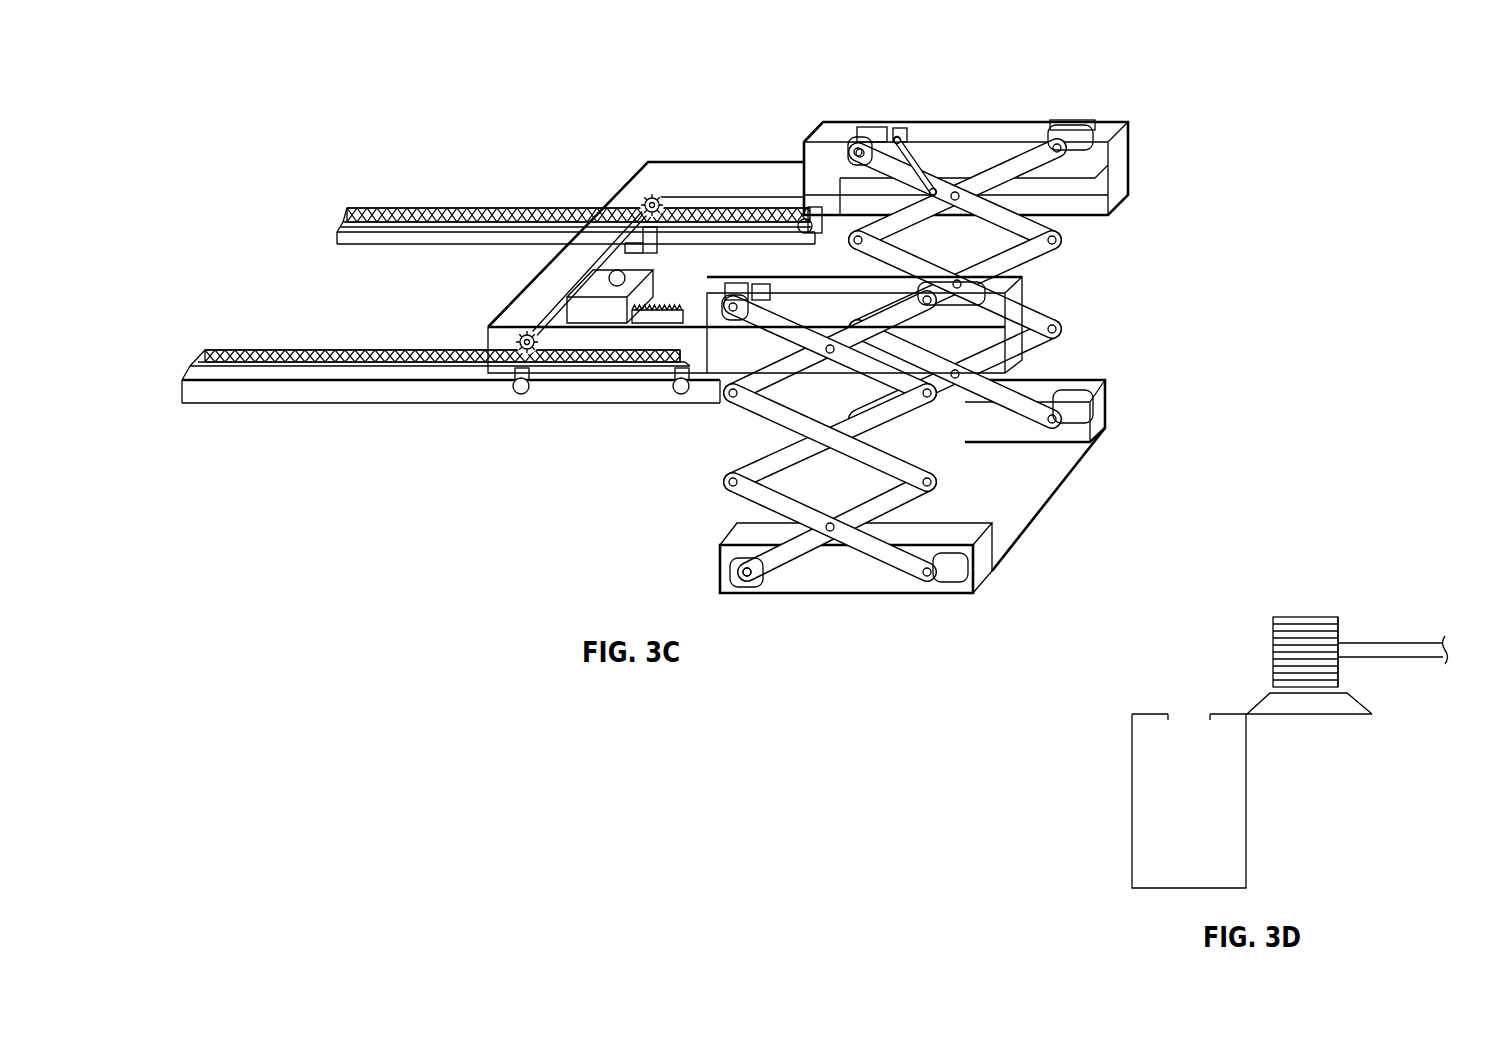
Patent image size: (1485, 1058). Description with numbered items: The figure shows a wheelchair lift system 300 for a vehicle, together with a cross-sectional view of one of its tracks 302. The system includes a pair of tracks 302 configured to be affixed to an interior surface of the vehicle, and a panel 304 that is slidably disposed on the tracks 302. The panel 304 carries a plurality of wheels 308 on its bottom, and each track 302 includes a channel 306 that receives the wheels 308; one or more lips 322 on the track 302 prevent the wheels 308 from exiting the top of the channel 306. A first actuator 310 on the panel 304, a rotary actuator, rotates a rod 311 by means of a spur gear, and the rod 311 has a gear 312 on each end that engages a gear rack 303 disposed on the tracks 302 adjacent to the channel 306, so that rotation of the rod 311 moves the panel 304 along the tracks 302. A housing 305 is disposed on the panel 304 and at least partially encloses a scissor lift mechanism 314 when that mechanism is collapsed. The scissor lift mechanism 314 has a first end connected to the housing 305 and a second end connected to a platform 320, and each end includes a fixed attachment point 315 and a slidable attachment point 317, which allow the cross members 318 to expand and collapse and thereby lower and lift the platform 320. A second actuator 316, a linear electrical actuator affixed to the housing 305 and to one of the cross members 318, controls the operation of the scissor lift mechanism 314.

In FIG. 3C, the wheelchair lift system 300 is at (632, 330).
In FIG. 3C, the track 302 is at (337, 240).
In FIG. 3D, the track 302 is at (1372, 616).
In FIG. 3C, the gear rack 303 is at (260, 350).
In FIG. 3D, the gear rack 303 is at (1352, 698).
In FIG. 3C, the panel 304 is at (692, 178).
In FIG. 3C, the housing 305 is at (821, 134).
In FIG. 3D, the channel 306 is at (1140, 808).
In FIG. 3C, the wheels 308 is at (530, 388).
In FIG. 3C, the first actuator 310 is at (608, 278).
In FIG. 3C, the rod 311 is at (640, 240).
In FIG. 3D, the rod 311 is at (1430, 656).
In FIG. 3C, the gear 312 is at (652, 195).
In FIG. 3D, the gear 312 is at (1296, 615).
In FIG. 3C, the scissor lift mechanism 314 is at (1078, 296).
In FIG. 3C, the fixed attachment point 315 is at (878, 128).
In FIG. 3C, the second actuator 316 is at (910, 140).
In FIG. 3C, the slidable attachment point 317 is at (1068, 130).
In FIG. 3C, the cross member 318 is at (1056, 246).
In FIG. 3C, the platform 320 is at (1035, 478).
In FIG. 3D, the lip 322 is at (1150, 712).